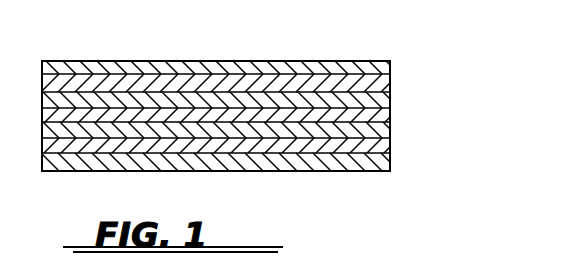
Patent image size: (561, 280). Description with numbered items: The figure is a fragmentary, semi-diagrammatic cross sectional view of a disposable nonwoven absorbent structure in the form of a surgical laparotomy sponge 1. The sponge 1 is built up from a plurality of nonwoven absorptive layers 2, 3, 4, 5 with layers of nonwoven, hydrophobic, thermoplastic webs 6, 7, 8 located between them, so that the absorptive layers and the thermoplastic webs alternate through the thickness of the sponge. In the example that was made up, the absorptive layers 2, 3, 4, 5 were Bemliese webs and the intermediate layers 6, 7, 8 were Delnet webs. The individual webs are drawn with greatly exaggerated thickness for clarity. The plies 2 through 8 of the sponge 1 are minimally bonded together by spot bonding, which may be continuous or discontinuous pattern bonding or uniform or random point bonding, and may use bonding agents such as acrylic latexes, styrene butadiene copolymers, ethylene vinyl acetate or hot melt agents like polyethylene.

The surgical laparotomy sponge 1 is at (290, 49).
The nonwoven absorptive layer 2 is at (390, 62).
The nonwoven hydrophobic thermoplastic web 6 is at (390, 80).
The nonwoven absorptive layer 3 is at (390, 95).
The nonwoven hydrophobic thermoplastic web 7 is at (390, 113).
The nonwoven absorptive layer 4 is at (390, 128).
The nonwoven hydrophobic thermoplastic web 8 is at (390, 143).
The nonwoven absorptive layer 5 is at (390, 163).